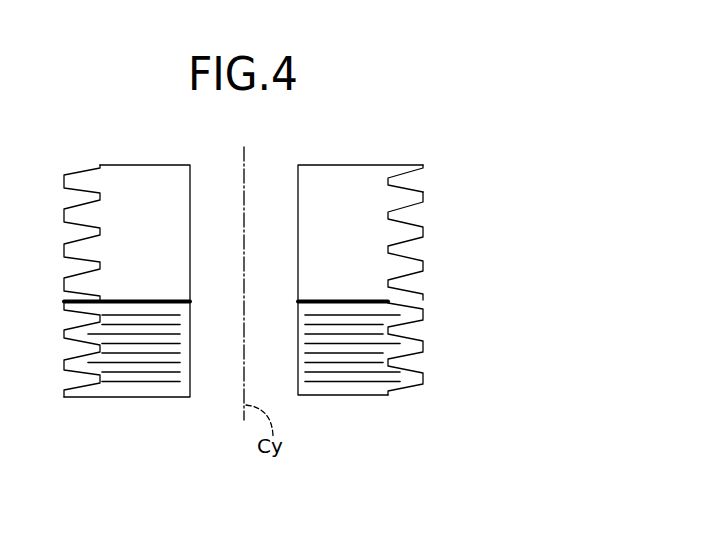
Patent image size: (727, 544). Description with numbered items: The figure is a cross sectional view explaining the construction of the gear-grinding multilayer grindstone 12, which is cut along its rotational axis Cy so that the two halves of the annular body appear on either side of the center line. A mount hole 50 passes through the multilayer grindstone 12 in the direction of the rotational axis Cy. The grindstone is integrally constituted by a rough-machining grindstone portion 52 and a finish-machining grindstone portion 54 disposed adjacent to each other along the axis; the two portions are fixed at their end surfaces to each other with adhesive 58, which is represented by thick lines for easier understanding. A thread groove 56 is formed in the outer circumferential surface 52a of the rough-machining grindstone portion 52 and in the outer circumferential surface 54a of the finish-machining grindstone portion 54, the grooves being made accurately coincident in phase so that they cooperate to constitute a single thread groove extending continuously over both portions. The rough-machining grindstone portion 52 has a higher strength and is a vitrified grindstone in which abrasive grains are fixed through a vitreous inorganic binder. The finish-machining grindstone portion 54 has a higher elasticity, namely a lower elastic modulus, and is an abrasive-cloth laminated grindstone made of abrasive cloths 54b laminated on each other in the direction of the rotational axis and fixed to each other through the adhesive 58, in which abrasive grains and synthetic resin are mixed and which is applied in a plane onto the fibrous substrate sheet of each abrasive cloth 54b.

The gear-grinding multilayer grindstone 12 is at (524, 189).
The mount hole 50 is at (190, 371).
The rough-machining grindstone portion 52 is at (452, 165).
The outer circumferential surface 52a is at (425, 190).
The finish-machining grindstone portion 54 is at (452, 305).
The outer circumferential surface 54a is at (423, 381).
The abrasive cloths 54b is at (138, 385).
The thread groove 56 is at (82, 202).
The adhesive 58 is at (174, 299).